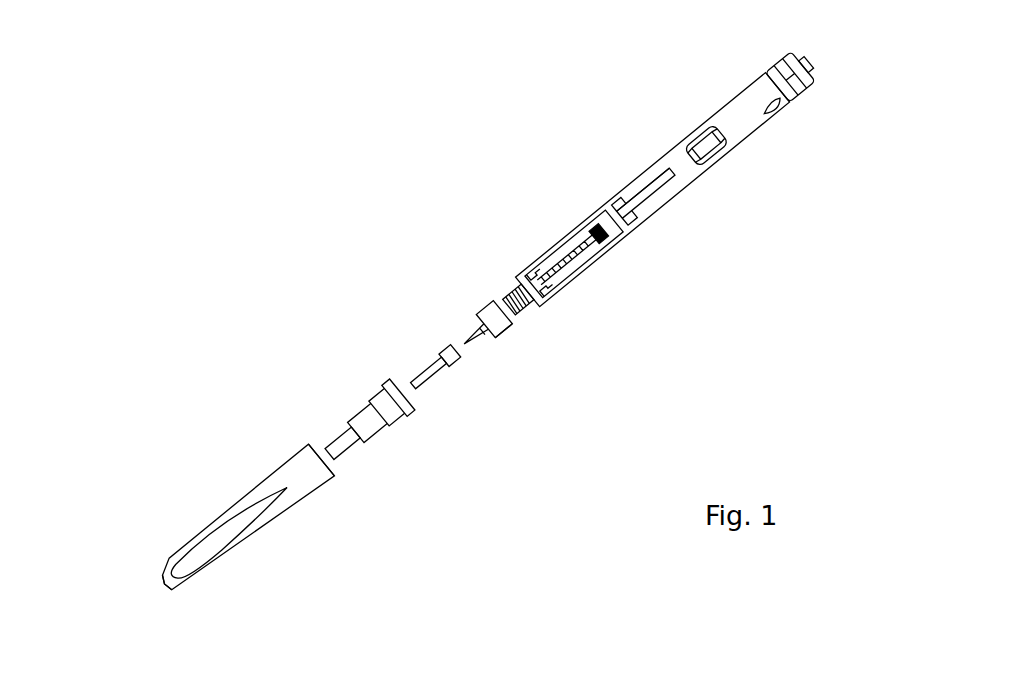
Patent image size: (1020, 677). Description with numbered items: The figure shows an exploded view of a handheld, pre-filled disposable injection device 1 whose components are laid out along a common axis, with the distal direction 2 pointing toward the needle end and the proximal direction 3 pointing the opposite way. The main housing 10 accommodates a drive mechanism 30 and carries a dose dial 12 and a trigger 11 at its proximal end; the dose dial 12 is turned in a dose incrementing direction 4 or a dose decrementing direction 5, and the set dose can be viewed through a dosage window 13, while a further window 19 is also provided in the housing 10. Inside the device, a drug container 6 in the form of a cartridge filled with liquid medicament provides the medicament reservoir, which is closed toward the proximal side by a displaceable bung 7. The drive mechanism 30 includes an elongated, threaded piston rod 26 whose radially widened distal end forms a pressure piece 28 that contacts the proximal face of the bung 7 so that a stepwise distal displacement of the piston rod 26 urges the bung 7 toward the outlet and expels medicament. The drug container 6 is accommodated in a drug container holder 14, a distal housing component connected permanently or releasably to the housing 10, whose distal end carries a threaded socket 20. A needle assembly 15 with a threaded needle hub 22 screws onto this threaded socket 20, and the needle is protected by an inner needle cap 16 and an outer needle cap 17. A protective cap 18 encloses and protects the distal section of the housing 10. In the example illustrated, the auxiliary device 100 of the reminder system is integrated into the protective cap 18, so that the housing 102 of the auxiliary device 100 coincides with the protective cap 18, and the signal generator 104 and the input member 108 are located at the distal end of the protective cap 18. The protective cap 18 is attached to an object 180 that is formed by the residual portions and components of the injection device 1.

The injection device 1 is at (562, 180).
The distal direction 2 is at (175, 482).
The proximal direction 3 is at (505, 215).
The dose incrementing direction 4 is at (740, 15).
The dose decrementing direction 5 is at (840, 150).
The drug container 6 is at (570, 278).
The bung 7 is at (600, 248).
The housing 10 is at (636, 190).
The trigger 11 is at (808, 60).
The dose dial 12 is at (765, 57).
The dosage window 13 is at (718, 128).
The drug container holder 14 is at (583, 237).
The needle assembly 15 is at (490, 313).
The inner needle cap 16 is at (428, 372).
The outer needle cap 17 is at (383, 398).
The protective cap 18 is at (298, 462).
The window 19 is at (530, 235).
The threaded socket 20 is at (527, 313).
The needle hub 22 is at (493, 328).
The piston rod 26 is at (656, 197).
The pressure piece 28 is at (634, 230).
The drive mechanism 30 is at (659, 138).
The auxiliary device 100 is at (245, 454).
The housing 102 is at (318, 480).
The signal generator 104 is at (206, 625).
The input member 108 is at (167, 590).
The object 180 is at (277, 409).